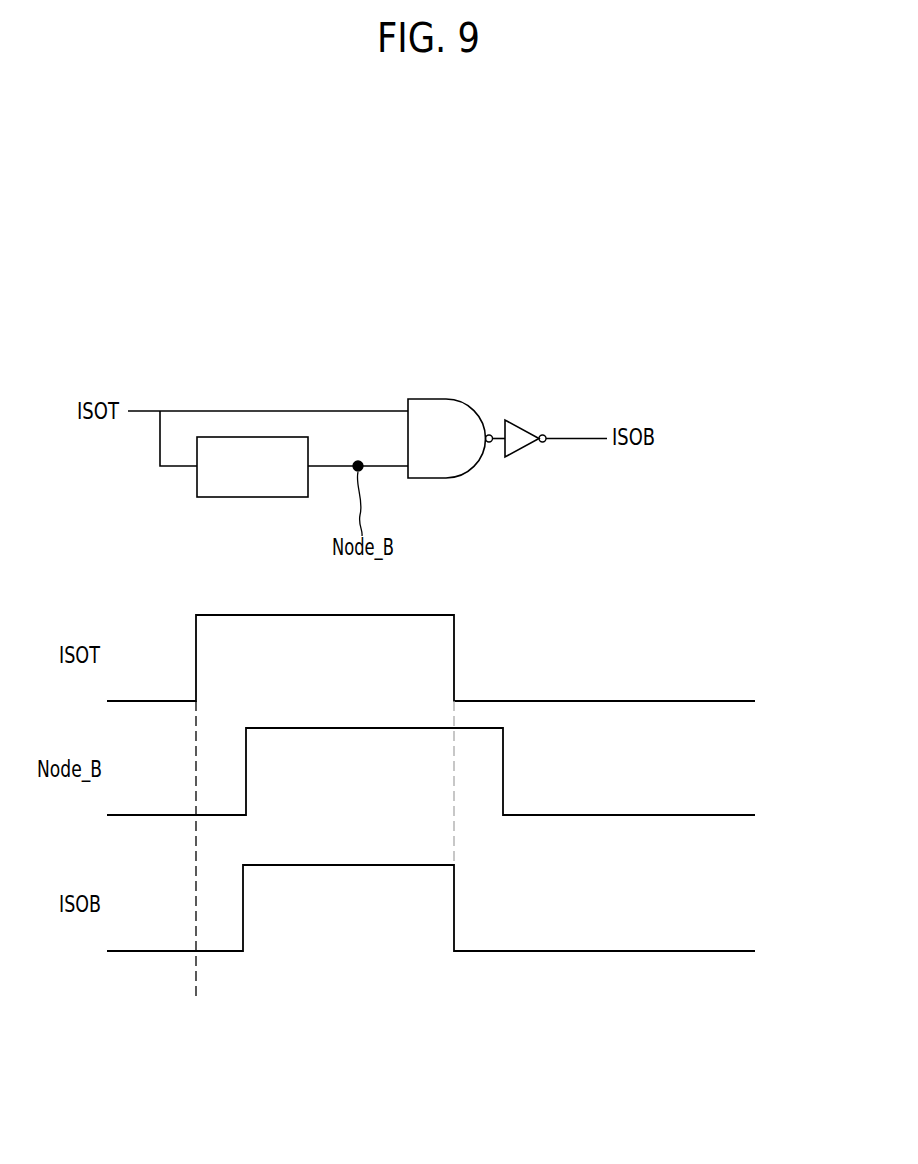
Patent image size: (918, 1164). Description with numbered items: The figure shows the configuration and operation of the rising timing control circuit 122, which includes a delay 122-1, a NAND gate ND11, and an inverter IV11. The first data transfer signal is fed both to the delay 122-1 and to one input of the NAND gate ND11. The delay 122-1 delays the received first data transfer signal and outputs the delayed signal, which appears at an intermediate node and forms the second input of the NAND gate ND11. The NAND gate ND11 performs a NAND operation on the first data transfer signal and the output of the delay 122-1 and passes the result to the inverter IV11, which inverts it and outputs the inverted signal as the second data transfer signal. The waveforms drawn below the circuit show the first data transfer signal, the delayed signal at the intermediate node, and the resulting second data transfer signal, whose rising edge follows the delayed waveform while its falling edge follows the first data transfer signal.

The rising timing control circuit 122 is at (583, 311).
The delay 122-1 is at (273, 498).
The NAND gate ND11 is at (447, 480).
The inverter IV11 is at (523, 459).